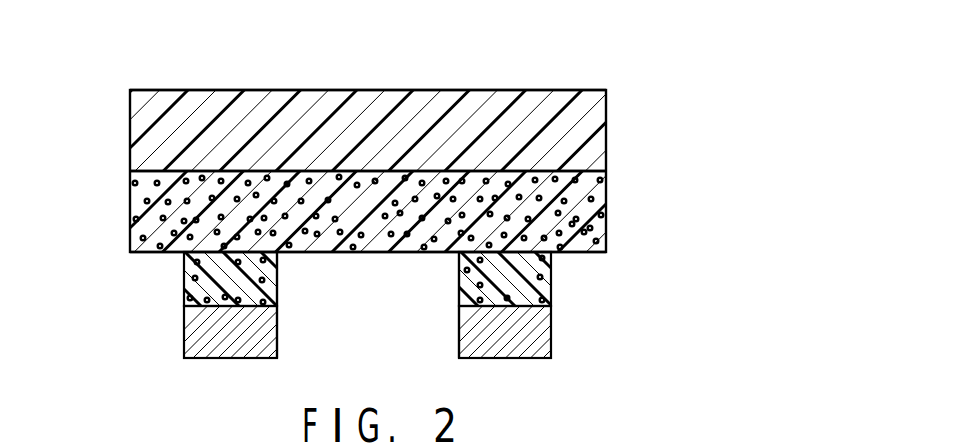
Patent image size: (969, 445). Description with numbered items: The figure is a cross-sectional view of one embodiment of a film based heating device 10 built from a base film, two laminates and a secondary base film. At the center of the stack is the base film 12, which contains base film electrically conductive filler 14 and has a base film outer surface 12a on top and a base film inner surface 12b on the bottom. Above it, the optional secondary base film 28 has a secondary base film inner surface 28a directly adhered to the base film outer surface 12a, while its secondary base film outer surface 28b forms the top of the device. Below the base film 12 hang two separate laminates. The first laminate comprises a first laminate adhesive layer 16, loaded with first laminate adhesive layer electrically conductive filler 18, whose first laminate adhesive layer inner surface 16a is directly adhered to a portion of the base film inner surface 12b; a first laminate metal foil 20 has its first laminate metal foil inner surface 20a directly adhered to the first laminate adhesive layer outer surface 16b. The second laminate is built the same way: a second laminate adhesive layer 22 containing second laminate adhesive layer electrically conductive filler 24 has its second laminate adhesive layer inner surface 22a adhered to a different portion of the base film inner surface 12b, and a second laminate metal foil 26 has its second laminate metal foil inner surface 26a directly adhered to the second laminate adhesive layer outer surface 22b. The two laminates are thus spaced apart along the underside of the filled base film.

The film based heating device 10 is at (556, 66).
The base film 12 is at (369, 225).
The base film outer surface 12a is at (210, 181).
The base film inner surface 12b is at (210, 243).
The base film electrically conductive filler 14 is at (577, 223).
The first laminate adhesive layer 16 is at (519, 288).
The first laminate adhesive layer inner surface 16a is at (532, 255).
The first laminate adhesive layer outer surface 16b is at (532, 304).
The first laminate adhesive layer electrically conductive filler 18 is at (463, 278).
The first laminate metal foil 20 is at (519, 341).
The first laminate metal foil inner surface 20a is at (532, 320).
The second laminate adhesive layer 22 is at (243, 288).
The second laminate adhesive layer inner surface 22a is at (186, 262).
The second laminate adhesive layer outer surface 22b is at (186, 294).
The second laminate adhesive layer electrically conductive filler 24 is at (268, 278).
The second laminate metal foil 26 is at (243, 341).
The second laminate metal foil inner surface 26a is at (188, 331).
The secondary base film 28 is at (366, 142).
The secondary base film inner surface 28a is at (210, 167).
The secondary base film outer surface 28b is at (210, 101).